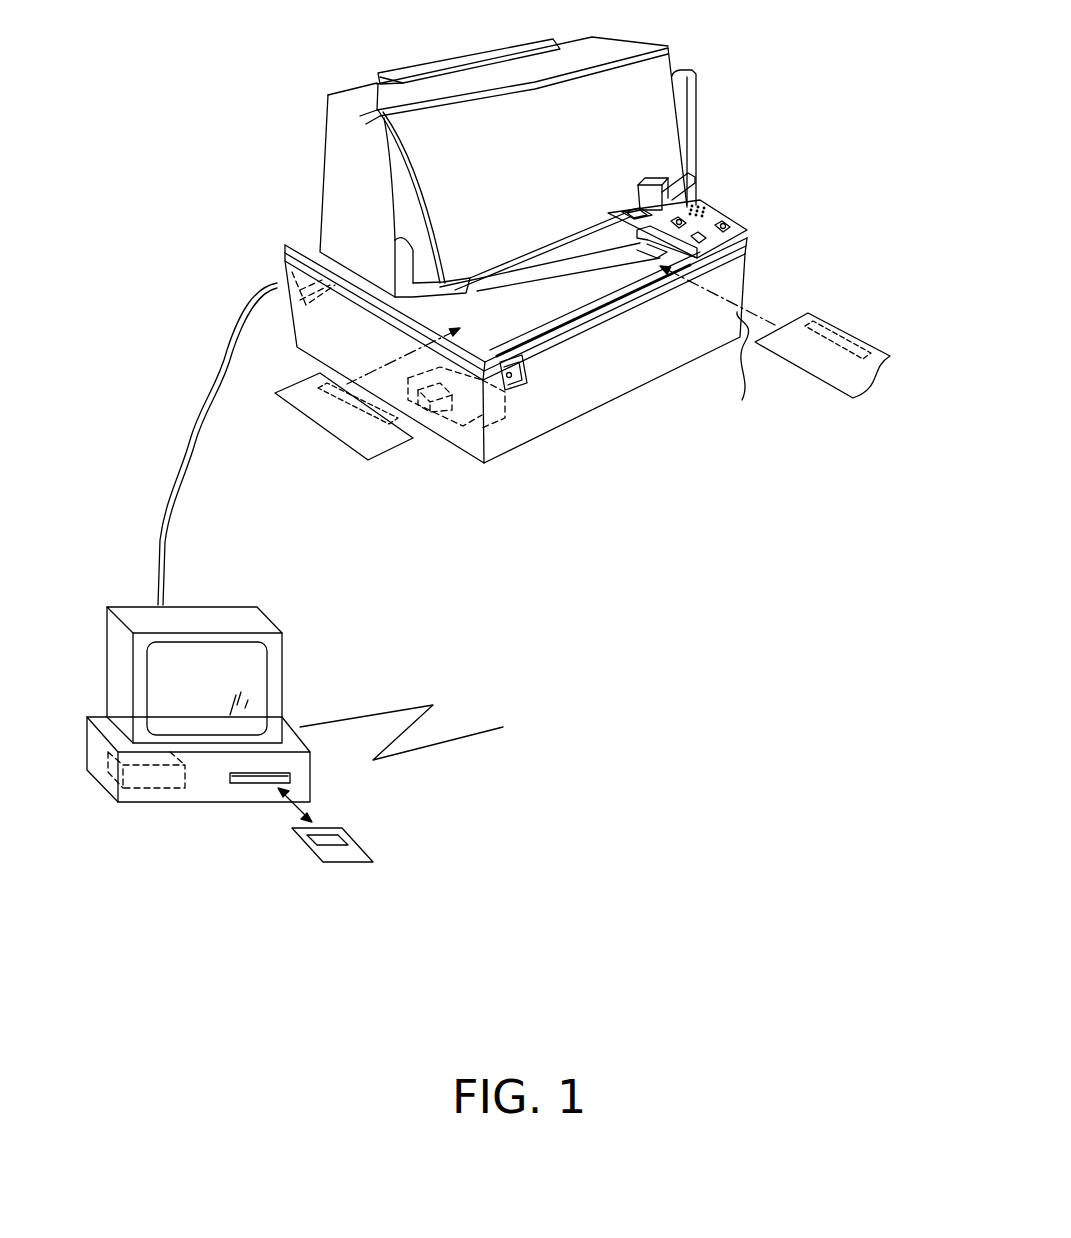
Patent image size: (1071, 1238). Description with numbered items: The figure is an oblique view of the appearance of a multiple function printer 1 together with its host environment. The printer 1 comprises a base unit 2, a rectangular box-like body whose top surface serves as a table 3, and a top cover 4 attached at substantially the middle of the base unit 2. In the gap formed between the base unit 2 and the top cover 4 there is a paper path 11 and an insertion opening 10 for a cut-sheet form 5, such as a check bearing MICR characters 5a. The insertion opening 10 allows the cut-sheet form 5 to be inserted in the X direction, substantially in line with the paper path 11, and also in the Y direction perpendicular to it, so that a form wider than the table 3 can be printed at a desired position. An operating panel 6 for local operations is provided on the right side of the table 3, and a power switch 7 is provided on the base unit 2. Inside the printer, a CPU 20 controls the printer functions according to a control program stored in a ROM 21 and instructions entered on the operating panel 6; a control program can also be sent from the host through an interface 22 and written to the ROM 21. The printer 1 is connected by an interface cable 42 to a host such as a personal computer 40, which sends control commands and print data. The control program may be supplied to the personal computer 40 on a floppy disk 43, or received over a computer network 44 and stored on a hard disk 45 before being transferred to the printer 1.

The multiple function printer 1 is at (714, 80).
The base unit 2 is at (595, 395).
The table 3 is at (670, 243).
The top cover 4 is at (343, 137).
The cut-sheet form 5 is at (323, 430).
The MICR characters 5a is at (385, 430).
The operating panel 6 is at (727, 228).
The power switch 7 is at (525, 388).
The insertion opening 10 is at (610, 268).
The paper path 11 is at (290, 248).
The CPU 20 is at (505, 418).
The ROM 21 is at (455, 425).
The interface 22 is at (290, 285).
The personal computer 40 is at (283, 683).
The interface cable 42 is at (190, 423).
The floppy disk 43 is at (347, 857).
The computer network 44 is at (433, 745).
The hard disk 45 is at (157, 782).